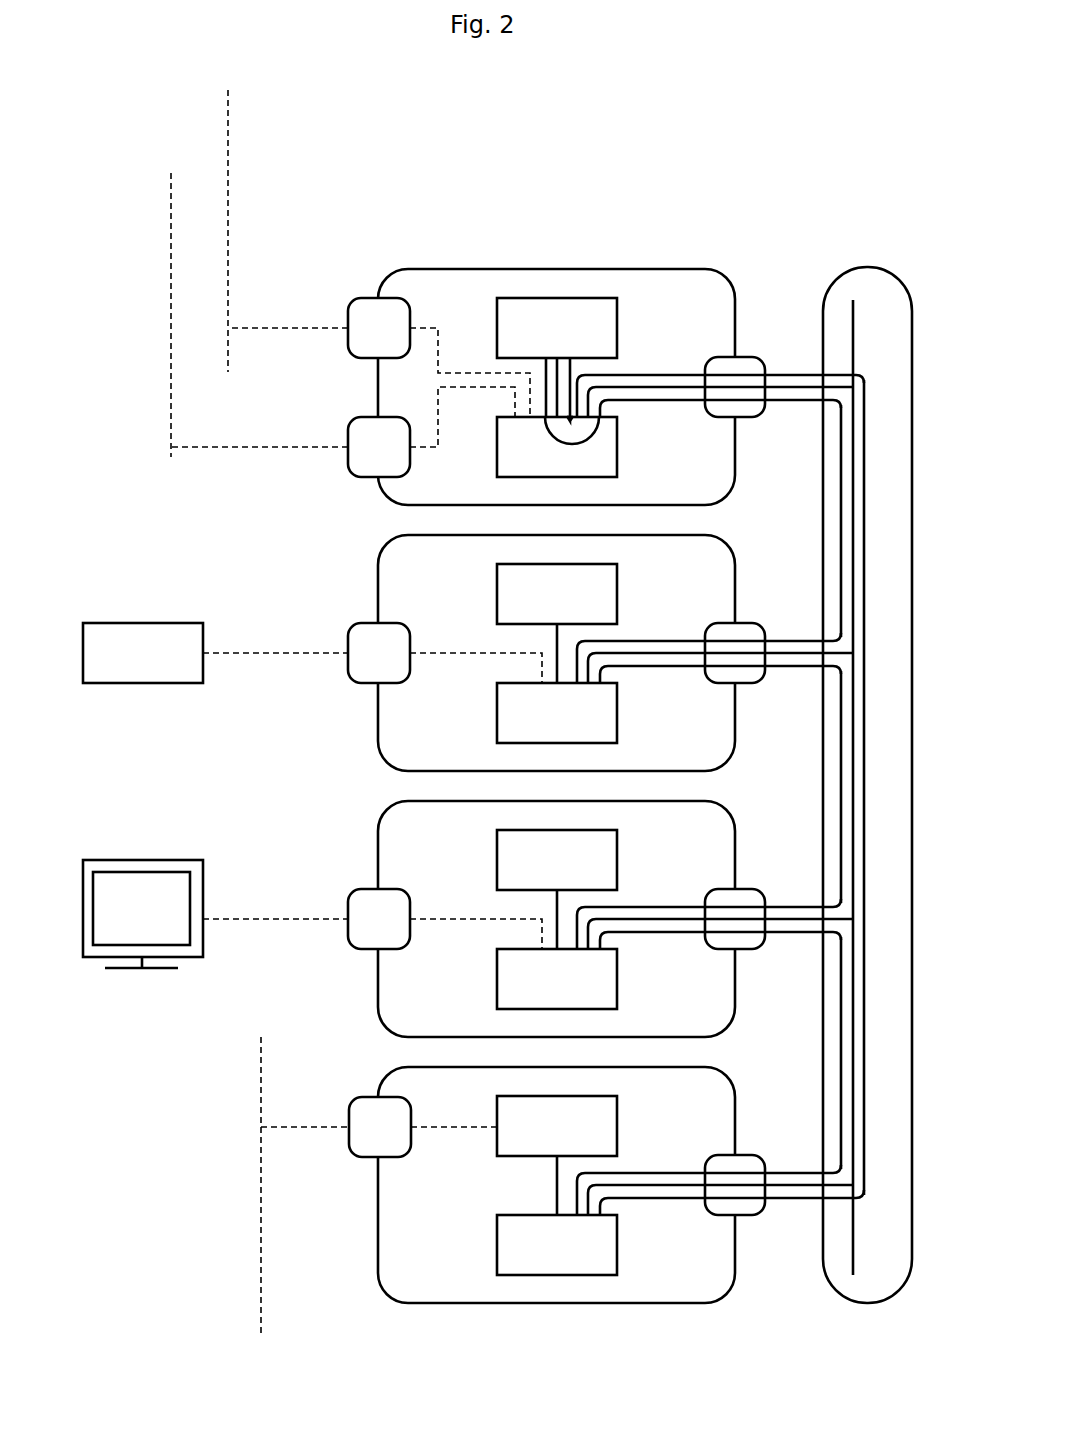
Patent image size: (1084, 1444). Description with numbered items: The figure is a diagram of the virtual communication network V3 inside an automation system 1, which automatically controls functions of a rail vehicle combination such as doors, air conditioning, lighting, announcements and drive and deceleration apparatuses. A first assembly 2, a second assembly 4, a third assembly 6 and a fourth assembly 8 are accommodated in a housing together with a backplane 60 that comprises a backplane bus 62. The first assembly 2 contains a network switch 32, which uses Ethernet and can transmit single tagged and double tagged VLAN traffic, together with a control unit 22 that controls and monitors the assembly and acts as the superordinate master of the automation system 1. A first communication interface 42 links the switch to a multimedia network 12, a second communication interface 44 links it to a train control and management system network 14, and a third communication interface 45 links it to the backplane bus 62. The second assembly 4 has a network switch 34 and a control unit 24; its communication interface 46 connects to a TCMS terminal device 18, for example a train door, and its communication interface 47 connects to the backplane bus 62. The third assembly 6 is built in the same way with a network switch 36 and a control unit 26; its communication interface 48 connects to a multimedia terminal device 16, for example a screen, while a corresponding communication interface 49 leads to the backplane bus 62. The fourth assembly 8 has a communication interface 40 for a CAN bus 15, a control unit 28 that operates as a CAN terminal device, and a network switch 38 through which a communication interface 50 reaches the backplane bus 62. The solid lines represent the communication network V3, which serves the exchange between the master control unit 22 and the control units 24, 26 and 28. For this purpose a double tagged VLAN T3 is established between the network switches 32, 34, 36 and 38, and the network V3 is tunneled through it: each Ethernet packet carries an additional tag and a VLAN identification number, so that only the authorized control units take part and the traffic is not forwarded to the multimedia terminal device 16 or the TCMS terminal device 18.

The automation system 1 is at (762, 182).
The first assembly 2 is at (570, 319).
The second assembly 4 is at (564, 612).
The third assembly 6 is at (564, 891).
The fourth assembly 8 is at (570, 1172).
The multimedia network 12 is at (228, 142).
The train control and management system network 14 is at (171, 257).
The CAN bus 15 is at (261, 1170).
The multimedia terminal device 16 is at (120, 860).
The TCMS terminal device 18 is at (118, 623).
The control unit 22 is at (497, 298).
The control unit 24 is at (497, 564).
The control unit 26 is at (497, 860).
The control unit 28 is at (497, 1130).
The network switch 32 is at (598, 417).
The network switch 34 is at (497, 712).
The network switch 36 is at (497, 993).
The network switch 38 is at (497, 1260).
The communication interface 40 is at (368, 1097).
The first communication interface 42 is at (372, 298).
The second communication interface 44 is at (372, 417).
The third communication interface 45 is at (745, 357).
The communication interface 46 is at (368, 623).
The communication interface 47 is at (745, 623).
The communication interface 48 is at (368, 889).
The bus connector 49 is at (745, 889).
The communication interface 50 is at (745, 1155).
The backplane 60 is at (862, 266).
The backplane bus 62 is at (857, 440).
The double tagged VLAN T3 is at (867, 492).
The virtual communication network V3 is at (560, 382).